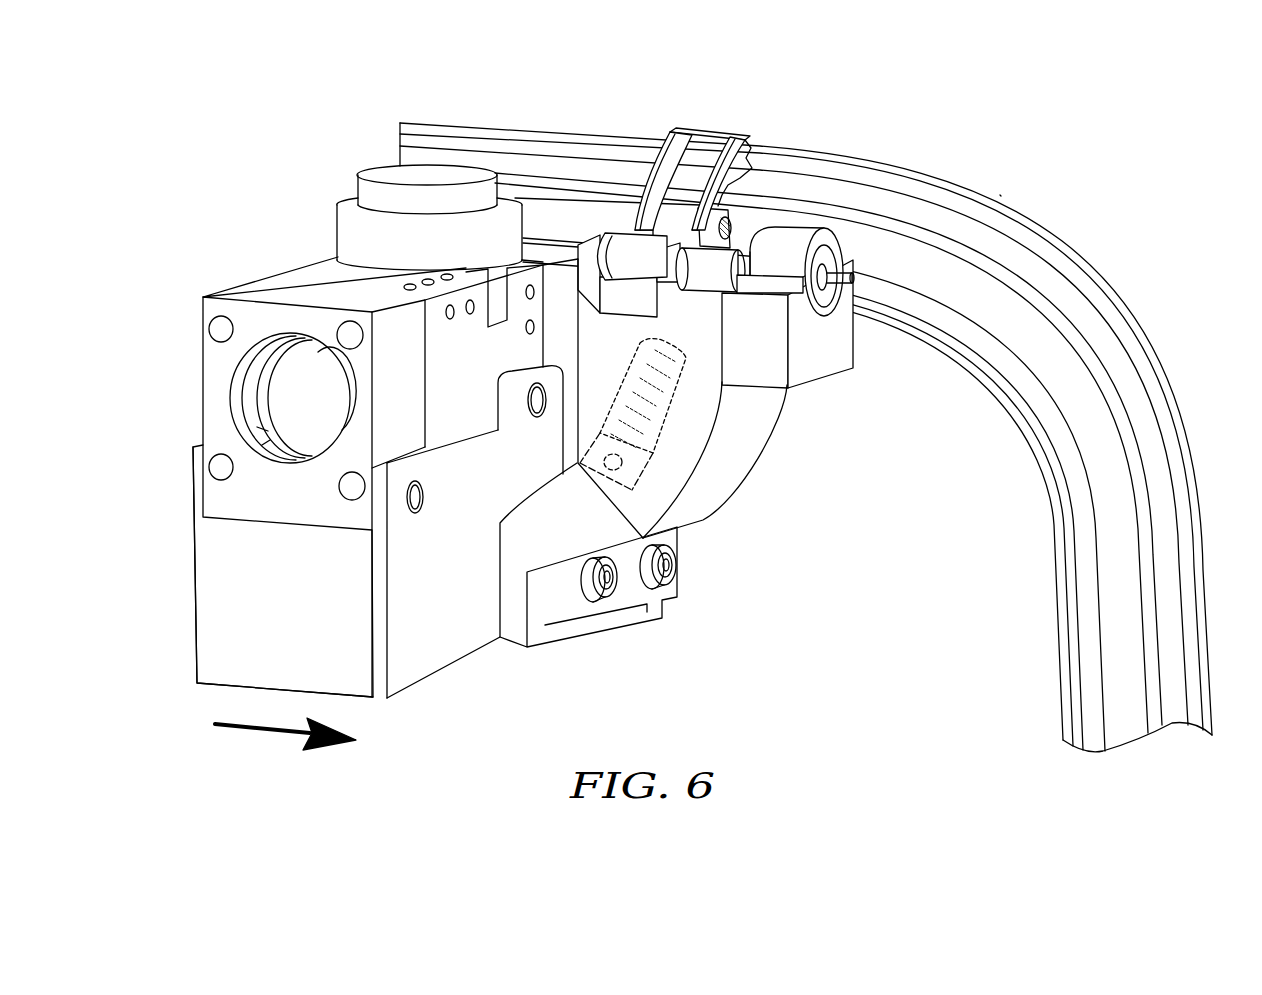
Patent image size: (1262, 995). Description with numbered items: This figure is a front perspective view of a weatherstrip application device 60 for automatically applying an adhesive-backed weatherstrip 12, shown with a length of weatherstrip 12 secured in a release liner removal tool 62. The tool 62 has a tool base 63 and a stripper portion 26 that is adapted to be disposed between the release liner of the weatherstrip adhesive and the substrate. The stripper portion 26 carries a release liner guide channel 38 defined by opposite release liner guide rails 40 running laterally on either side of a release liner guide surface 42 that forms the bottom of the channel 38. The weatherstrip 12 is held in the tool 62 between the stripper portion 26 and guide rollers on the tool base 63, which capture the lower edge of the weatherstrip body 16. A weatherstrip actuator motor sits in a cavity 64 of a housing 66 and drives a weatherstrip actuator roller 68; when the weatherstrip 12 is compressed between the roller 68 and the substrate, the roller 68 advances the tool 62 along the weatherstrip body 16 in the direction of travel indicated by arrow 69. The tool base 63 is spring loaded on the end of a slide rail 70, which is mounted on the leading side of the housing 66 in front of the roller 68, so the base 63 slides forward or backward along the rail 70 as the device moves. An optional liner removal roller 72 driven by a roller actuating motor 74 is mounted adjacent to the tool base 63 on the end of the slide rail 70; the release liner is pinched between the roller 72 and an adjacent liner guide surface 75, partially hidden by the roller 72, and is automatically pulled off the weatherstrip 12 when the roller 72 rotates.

The adhesive-backed weatherstrip 12 is at (1174, 370).
The weatherstrip body 16 is at (960, 285).
The stripper portion 26 is at (712, 210).
The release liner guide channel 38 is at (712, 134).
The release liner guide rails 40 is at (672, 128).
The release liner guide surface 42 is at (641, 255).
The weatherstrip application device 60 is at (170, 262).
The release liner removal tool 62 is at (605, 355).
The tool base 63 is at (720, 203).
The cavity 64 is at (276, 398).
The housing 66 is at (283, 497).
The weatherstrip actuator roller 68 is at (347, 229).
The arrow 69 is at (264, 742).
The slide rail 70 is at (550, 527).
The liner removal roller 72 is at (632, 246).
The roller actuating motor 74 is at (823, 303).
The liner guide surface 75 is at (628, 292).